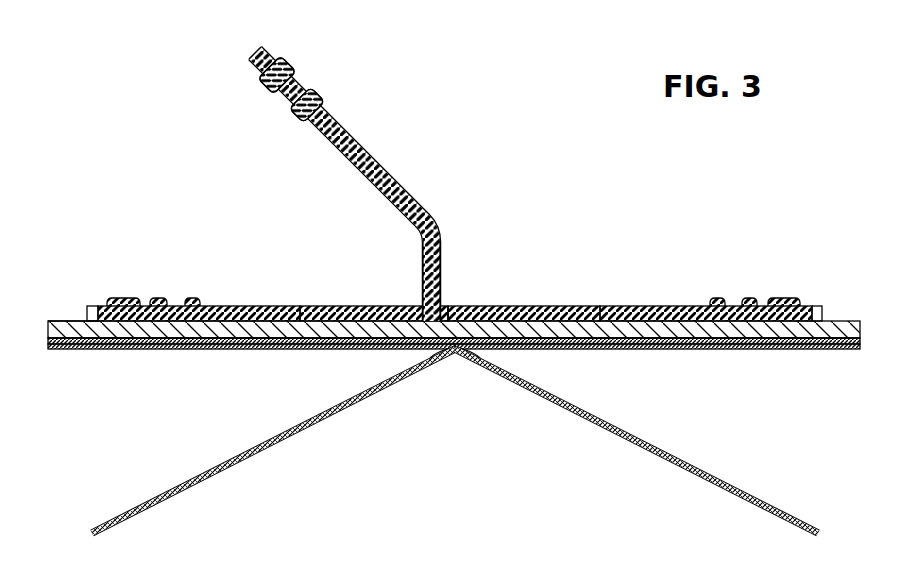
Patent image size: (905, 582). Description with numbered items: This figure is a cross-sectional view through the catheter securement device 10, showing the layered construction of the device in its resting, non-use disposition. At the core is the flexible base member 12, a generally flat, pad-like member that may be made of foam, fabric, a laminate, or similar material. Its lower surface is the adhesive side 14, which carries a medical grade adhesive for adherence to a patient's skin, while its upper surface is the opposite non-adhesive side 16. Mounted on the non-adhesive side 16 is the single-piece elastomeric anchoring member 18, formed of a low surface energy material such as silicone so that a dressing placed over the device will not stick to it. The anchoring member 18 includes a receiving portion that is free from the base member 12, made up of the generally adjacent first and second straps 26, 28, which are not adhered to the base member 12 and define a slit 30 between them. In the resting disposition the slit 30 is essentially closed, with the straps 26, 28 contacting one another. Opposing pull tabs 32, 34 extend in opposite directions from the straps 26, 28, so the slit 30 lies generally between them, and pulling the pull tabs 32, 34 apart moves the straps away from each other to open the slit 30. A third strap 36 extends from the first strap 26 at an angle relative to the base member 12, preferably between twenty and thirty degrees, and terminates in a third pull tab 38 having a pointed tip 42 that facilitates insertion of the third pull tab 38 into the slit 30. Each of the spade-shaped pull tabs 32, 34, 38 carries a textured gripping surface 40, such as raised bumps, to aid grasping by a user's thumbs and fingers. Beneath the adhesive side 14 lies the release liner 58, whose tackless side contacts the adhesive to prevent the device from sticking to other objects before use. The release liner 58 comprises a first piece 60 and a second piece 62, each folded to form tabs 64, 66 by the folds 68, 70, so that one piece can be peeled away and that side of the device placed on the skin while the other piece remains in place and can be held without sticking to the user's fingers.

The catheter securement device 10 is at (486, 56).
The flexible base member 12 is at (48, 316).
The adhesive side 14 is at (44, 344).
The non-adhesive side 16 is at (70, 320).
The anchoring member 18 is at (828, 303).
The first strap 26 is at (380, 305).
The second strap 28 is at (490, 305).
The slit 30 is at (451, 310).
The pull tab 32 is at (210, 305).
The pull tab 34 is at (697, 304).
The third strap 36 is at (441, 263).
The third pull tab 38 is at (352, 164).
The textured gripping surface 40 is at (322, 92).
The pointed tip 42 is at (257, 48).
The release liner 58 is at (212, 352).
The first piece 60 is at (250, 349).
The second piece 62 is at (680, 349).
The tab 64 is at (177, 492).
The tab 66 is at (672, 462).
The fold 68 is at (447, 349).
The fold 70 is at (463, 349).